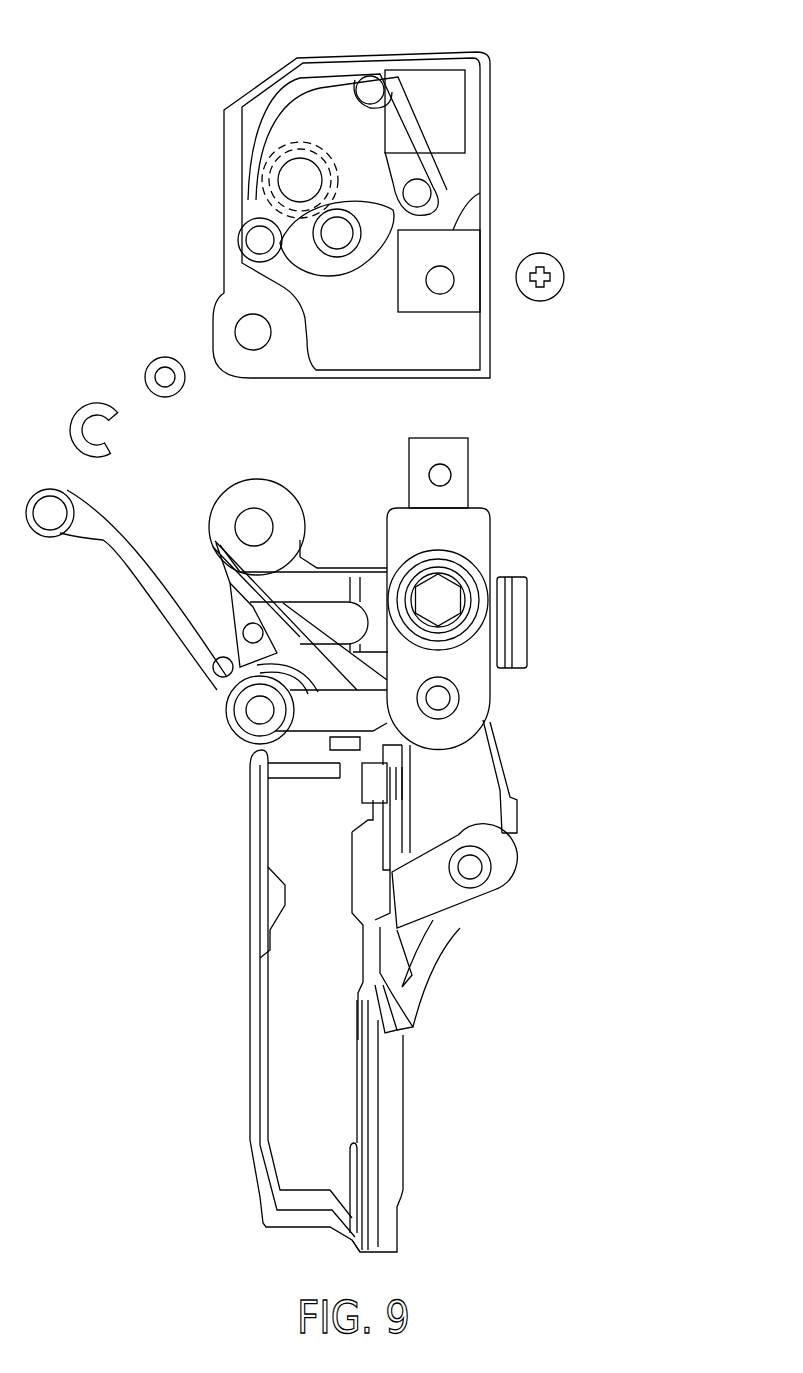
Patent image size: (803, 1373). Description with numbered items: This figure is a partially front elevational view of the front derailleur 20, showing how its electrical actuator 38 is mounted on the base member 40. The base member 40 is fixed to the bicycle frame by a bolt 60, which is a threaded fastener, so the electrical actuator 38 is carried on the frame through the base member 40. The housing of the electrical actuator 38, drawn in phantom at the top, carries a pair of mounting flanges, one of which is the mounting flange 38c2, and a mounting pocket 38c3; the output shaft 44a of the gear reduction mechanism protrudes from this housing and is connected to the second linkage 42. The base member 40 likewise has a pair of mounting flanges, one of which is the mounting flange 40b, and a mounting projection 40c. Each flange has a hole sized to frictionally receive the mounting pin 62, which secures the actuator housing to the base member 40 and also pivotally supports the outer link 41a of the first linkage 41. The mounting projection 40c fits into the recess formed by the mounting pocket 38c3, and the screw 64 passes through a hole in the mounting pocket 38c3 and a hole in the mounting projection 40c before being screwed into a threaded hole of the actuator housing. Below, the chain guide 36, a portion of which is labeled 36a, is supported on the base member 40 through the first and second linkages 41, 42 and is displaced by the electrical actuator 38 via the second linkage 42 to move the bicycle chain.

The derailleur 20 is at (376, 192).
The chain guide 36 is at (342, 994).
The housing portion 36a is at (407, 1137).
The electrical actuator 38 is at (336, 192).
The mounting flange 38c2 is at (222, 318).
The mounting pocket 38c3 is at (480, 191).
The base member 40 is at (363, 635).
The mounting flange 40b is at (243, 477).
The mounting projection 40c is at (470, 453).
The first linkage 41 is at (253, 611).
The outer link 41a is at (230, 613).
The second linkage 42 is at (125, 588).
The output shaft 44a is at (262, 174).
The bolt 60 is at (452, 577).
The mounting pin 62 is at (145, 364).
The screw 64 is at (560, 260).